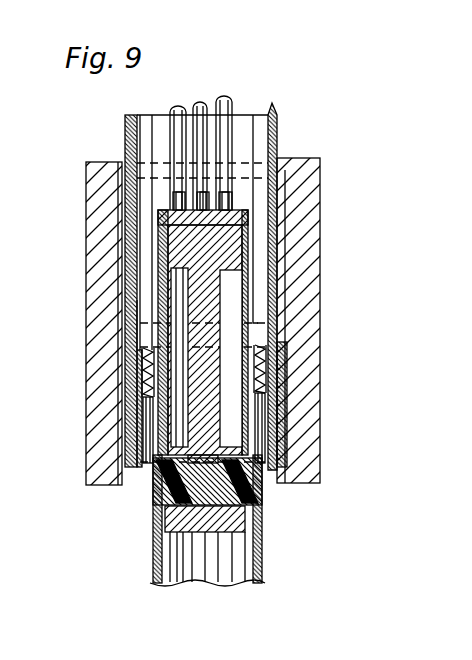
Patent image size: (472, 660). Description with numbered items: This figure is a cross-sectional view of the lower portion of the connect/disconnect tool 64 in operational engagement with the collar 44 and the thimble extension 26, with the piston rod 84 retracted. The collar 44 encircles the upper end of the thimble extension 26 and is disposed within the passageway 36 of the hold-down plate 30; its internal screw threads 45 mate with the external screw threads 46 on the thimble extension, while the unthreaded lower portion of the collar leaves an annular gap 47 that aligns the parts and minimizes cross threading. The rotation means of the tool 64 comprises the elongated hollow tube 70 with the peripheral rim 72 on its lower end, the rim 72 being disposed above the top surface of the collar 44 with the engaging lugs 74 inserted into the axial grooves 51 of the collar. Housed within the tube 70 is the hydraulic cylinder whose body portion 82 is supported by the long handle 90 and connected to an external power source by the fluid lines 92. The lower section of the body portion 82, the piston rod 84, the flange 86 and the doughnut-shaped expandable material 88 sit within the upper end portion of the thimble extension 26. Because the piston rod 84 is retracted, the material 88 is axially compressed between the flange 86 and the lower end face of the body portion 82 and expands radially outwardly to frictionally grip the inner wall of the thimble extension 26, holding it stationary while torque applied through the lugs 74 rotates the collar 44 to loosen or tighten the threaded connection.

The thimble extension 26 is at (150, 566).
The hold-down plate 30 is at (86, 242).
The passageway 36 is at (124, 158).
The collar 44 is at (123, 397).
The internal screw threads 45 is at (257, 384).
The external screw threads 46 is at (130, 307).
The annular gap 47 is at (140, 478).
The grooves 51 is at (130, 412).
The tool 64 is at (300, 96).
The elongated hollow tube 70 is at (278, 148).
The peripheral rim 72 is at (287, 328).
The engaging lugs 74 is at (125, 362).
The body portion 82 is at (160, 282).
The piston rod 84 is at (218, 290).
The flange 86 is at (200, 532).
The expandable material 88 is at (258, 500).
The handle 90 is at (200, 106).
The fluid lines 92 is at (172, 110).